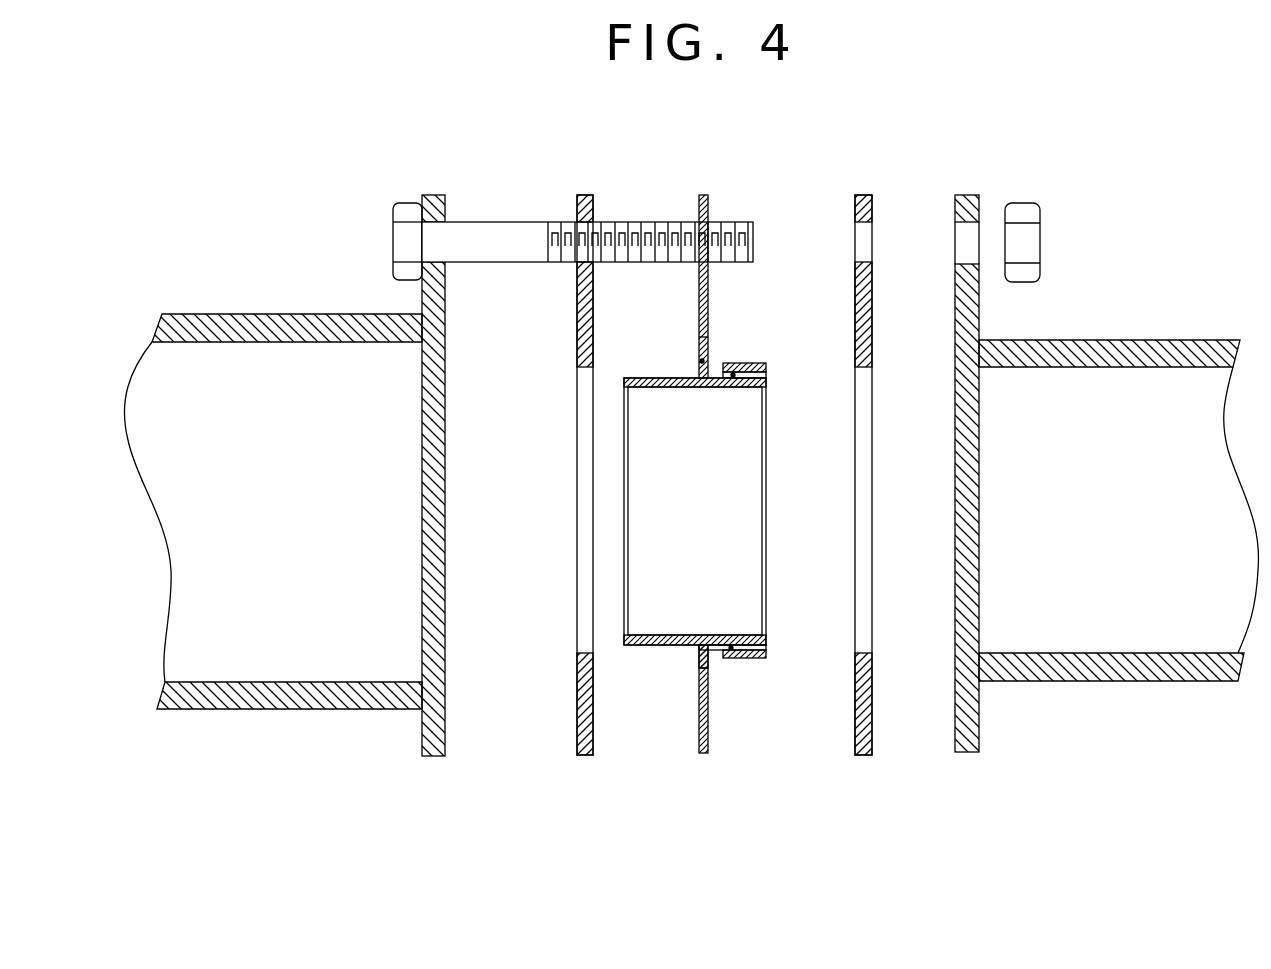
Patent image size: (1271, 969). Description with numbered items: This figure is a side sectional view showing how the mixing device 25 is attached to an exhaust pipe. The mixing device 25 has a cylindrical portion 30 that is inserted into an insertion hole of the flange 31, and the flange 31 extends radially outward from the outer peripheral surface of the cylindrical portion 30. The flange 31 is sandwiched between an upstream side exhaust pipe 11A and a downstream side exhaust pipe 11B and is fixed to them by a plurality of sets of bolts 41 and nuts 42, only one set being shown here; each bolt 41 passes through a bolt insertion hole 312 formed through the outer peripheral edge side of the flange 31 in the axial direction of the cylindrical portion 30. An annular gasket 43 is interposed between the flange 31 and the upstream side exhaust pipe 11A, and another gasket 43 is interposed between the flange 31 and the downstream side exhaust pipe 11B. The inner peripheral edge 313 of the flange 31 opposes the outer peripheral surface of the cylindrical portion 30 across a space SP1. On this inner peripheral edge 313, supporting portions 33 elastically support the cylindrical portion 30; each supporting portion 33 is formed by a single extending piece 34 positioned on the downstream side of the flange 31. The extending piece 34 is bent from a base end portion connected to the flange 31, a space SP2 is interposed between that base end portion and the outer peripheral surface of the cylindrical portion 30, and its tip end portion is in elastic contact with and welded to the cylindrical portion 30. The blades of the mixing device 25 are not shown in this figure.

The upstream side exhaust pipe 11A is at (242, 314).
The downstream side exhaust pipe 11B is at (1192, 340).
The bolt 41 is at (494, 222).
The nut 42 is at (1040, 226).
The gasket 43 is at (577, 702).
The mixing device 25 is at (668, 757).
The cylindrical portion 30 is at (766, 470).
The flange 31 is at (708, 736).
The bolt insertion hole 312 is at (706, 230).
The inner peripheral edge 313 is at (698, 673).
The supporting portion 33 is at (783, 348).
The extending piece 34 is at (734, 363).
The space SP1 is at (700, 361).
The space SP2 is at (733, 378).